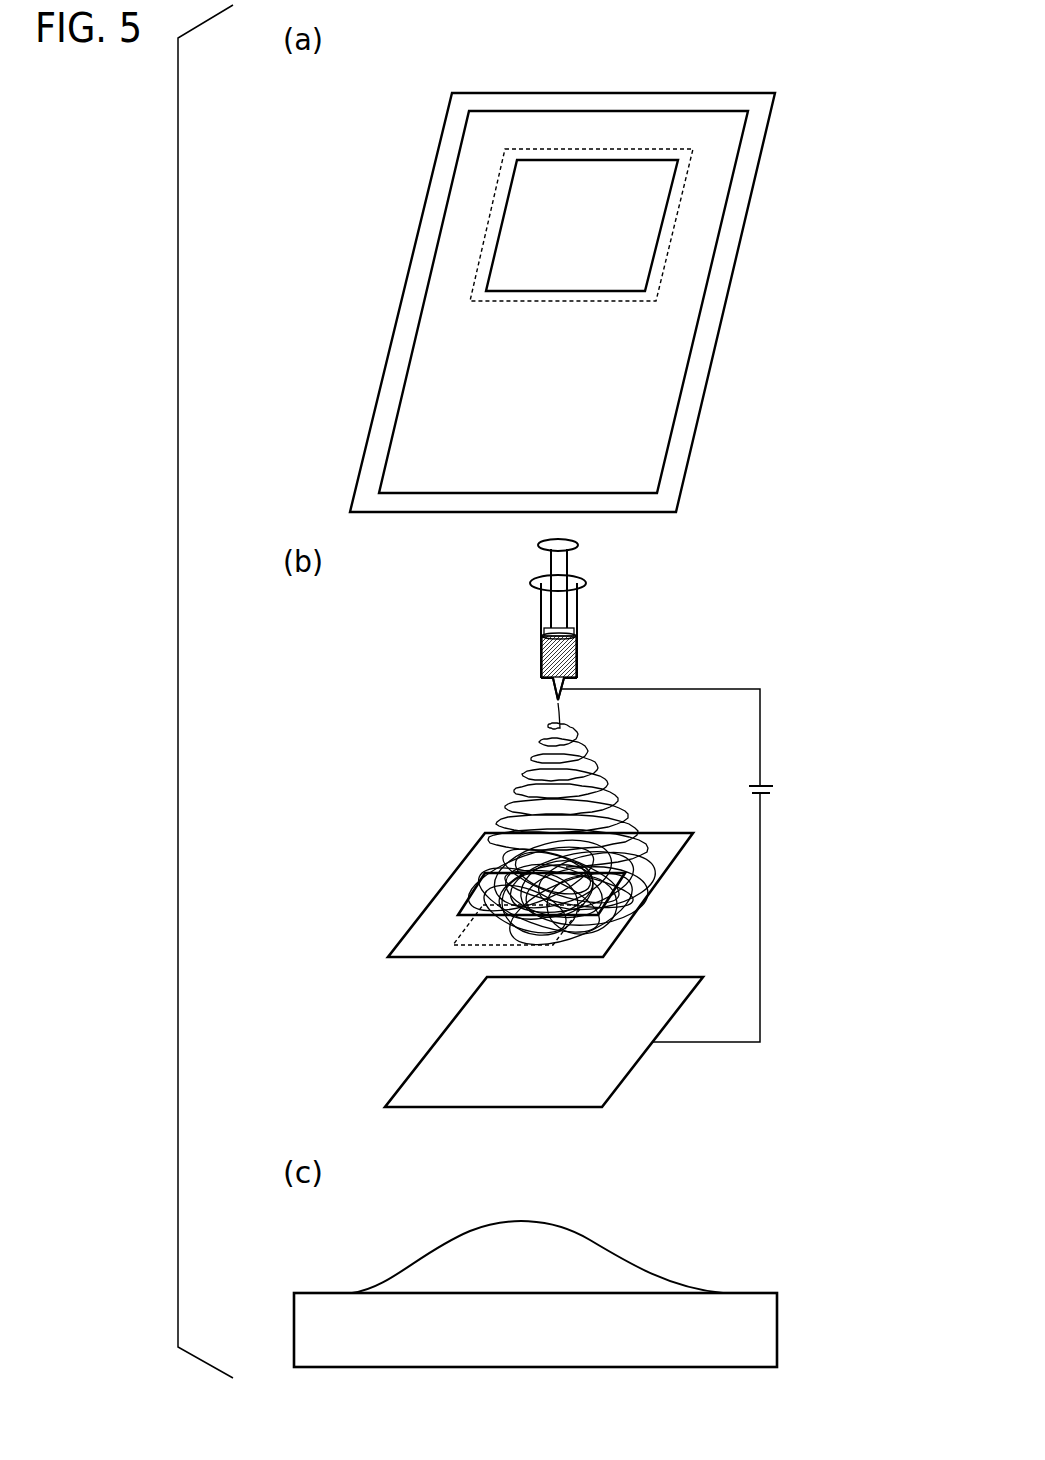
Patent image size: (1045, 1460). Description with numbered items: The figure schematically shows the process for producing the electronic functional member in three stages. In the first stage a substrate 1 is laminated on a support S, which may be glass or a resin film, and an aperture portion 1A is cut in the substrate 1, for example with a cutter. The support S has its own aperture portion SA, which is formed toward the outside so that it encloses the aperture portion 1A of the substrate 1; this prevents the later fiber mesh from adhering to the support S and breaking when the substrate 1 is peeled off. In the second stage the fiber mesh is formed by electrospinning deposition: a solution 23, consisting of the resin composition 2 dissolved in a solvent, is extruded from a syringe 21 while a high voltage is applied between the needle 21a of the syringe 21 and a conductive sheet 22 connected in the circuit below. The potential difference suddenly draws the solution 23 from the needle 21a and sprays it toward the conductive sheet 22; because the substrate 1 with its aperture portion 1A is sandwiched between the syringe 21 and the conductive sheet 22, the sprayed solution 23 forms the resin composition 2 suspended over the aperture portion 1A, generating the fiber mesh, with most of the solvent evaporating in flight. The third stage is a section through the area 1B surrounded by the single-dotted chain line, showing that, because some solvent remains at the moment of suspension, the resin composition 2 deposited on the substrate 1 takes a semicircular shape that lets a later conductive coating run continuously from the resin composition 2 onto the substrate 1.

The substrate 1 is at (614, 103).
The support S is at (690, 93).
The aperture portion 1A is at (669, 198).
The aperture portion of the support SA is at (665, 273).
The area 1B is at (563, 937).
The resin composition 2 is at (483, 880).
The syringe 21 is at (545, 609).
The needle 21a is at (557, 703).
The conductive sheet 22 is at (432, 1046).
The solution 23 is at (555, 651).